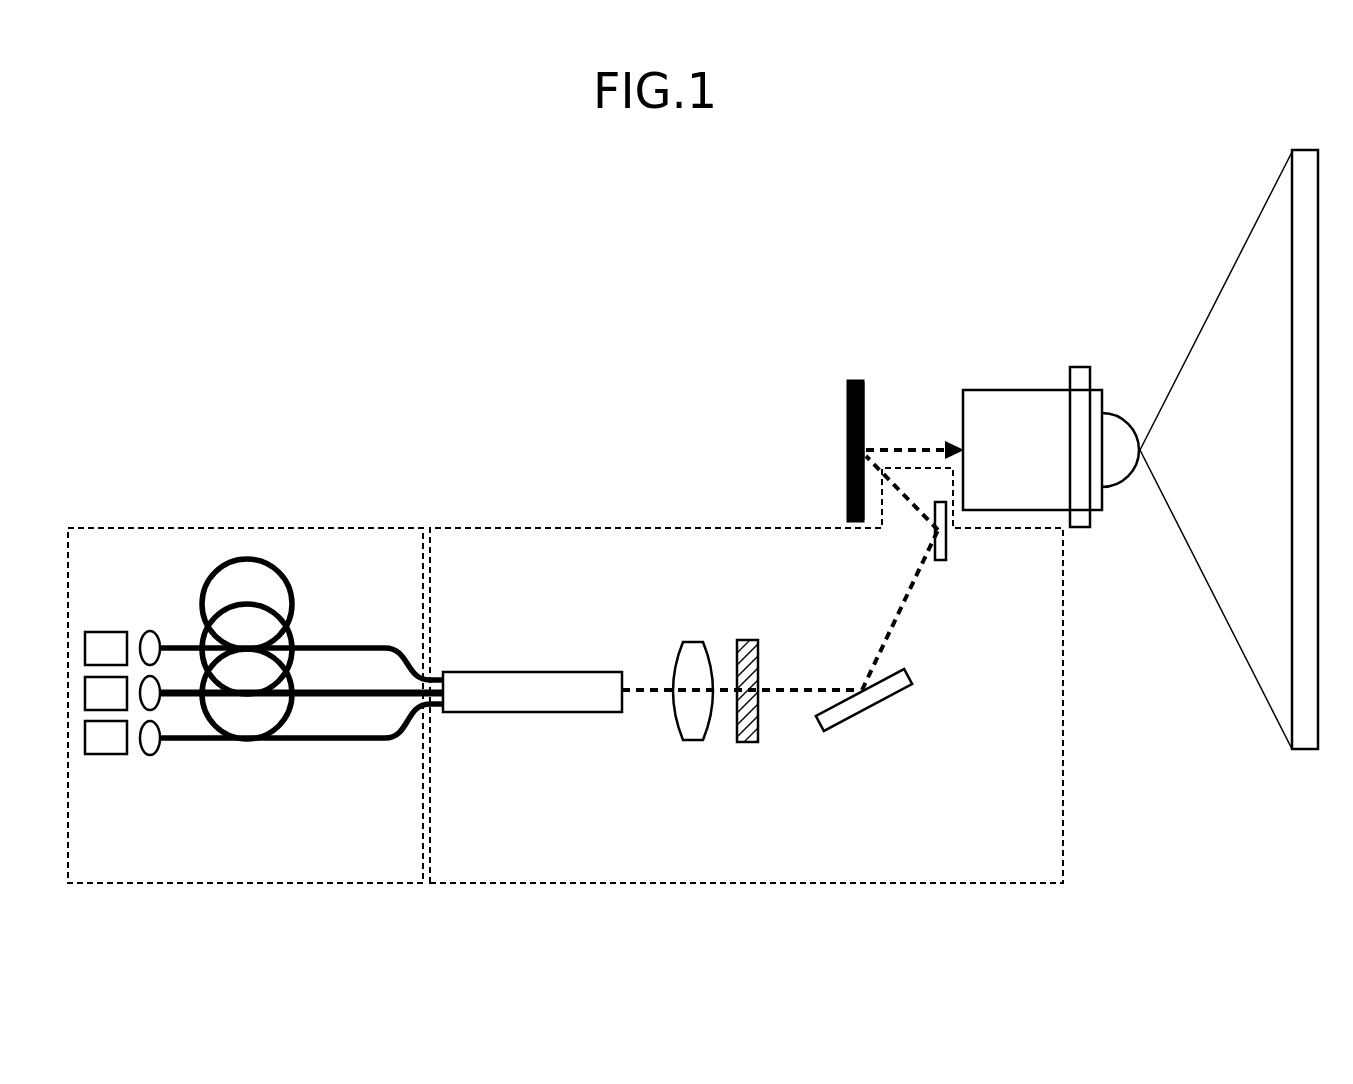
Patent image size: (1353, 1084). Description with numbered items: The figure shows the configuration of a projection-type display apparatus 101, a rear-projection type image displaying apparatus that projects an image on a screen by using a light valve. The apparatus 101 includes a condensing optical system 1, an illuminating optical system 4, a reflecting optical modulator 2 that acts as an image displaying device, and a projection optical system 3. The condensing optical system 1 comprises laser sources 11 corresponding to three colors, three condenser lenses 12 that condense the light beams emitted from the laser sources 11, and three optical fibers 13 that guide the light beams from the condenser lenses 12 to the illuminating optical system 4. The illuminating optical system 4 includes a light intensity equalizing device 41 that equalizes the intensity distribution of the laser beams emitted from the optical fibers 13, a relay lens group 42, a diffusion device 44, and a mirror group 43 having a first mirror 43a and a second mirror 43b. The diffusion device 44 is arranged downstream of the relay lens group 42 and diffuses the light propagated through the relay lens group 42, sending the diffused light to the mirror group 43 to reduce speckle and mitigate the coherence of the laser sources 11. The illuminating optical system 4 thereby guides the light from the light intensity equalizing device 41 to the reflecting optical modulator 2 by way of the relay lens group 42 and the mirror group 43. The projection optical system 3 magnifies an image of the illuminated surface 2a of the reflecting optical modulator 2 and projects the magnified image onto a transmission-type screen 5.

The projection-type display apparatus 101 is at (949, 211).
The condensing optical system 1 is at (368, 526).
The laser sources 11 is at (105, 755).
The condenser lenses 12 is at (150, 757).
The optical fibers 13 is at (245, 742).
The illuminating optical system 4 is at (785, 526).
The light intensity equalizing device 41 is at (553, 668).
The relay lens group 42 is at (693, 742).
The diffusion device 44 is at (748, 742).
The mirror group 43 is at (1033, 575).
The first mirror 43a is at (870, 707).
The second mirror 43b is at (947, 545).
The reflecting optical modulator 2 is at (846, 405).
The illuminated surface 2a is at (865, 400).
The projection optical system 3 is at (1115, 352).
The transmission-type screen 5 is at (1303, 750).